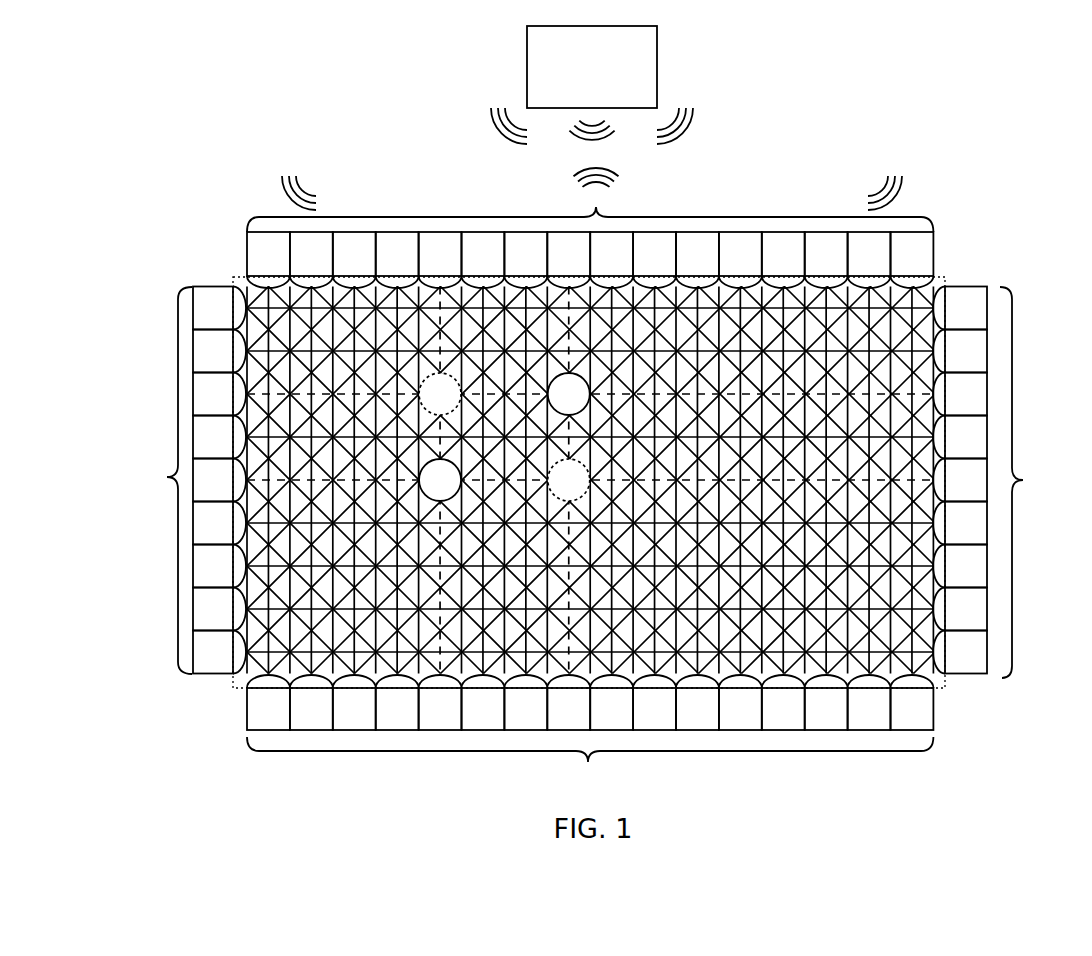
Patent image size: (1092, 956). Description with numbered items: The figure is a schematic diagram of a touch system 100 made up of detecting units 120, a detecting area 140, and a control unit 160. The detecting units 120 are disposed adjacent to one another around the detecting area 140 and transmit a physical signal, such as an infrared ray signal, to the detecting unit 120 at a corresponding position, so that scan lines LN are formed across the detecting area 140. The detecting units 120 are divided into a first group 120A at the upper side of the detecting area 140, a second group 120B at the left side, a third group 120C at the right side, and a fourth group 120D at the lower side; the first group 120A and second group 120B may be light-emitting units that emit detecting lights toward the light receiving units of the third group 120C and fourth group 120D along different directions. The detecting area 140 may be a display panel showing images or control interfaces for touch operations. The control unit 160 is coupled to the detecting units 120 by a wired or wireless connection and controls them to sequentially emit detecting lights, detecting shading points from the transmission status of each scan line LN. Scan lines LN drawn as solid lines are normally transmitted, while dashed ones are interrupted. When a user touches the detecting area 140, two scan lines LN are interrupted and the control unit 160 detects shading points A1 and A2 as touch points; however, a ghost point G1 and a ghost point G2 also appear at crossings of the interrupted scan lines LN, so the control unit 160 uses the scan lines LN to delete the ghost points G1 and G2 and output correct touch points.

The touch system 100 is at (852, 142).
The detecting unit 120 is at (590, 481).
The first group 120A is at (590, 200).
The second group 120B is at (155, 480).
The third group 120C is at (590, 761).
The fourth group 120D is at (1038, 482).
The detecting area 140 is at (940, 277).
The control unit 160 is at (578, 100).
The scan line LN is at (247, 297).
The shading point A1 is at (558, 403).
The shading point A2 is at (429, 489).
The ghost point G1 is at (558, 489).
The ghost point G2 is at (429, 403).